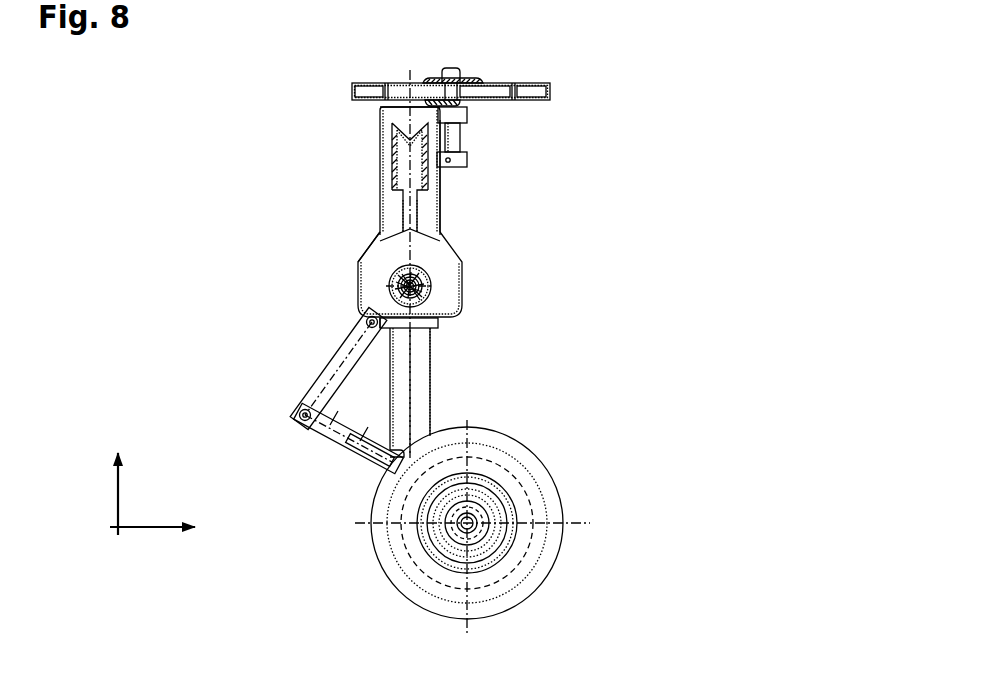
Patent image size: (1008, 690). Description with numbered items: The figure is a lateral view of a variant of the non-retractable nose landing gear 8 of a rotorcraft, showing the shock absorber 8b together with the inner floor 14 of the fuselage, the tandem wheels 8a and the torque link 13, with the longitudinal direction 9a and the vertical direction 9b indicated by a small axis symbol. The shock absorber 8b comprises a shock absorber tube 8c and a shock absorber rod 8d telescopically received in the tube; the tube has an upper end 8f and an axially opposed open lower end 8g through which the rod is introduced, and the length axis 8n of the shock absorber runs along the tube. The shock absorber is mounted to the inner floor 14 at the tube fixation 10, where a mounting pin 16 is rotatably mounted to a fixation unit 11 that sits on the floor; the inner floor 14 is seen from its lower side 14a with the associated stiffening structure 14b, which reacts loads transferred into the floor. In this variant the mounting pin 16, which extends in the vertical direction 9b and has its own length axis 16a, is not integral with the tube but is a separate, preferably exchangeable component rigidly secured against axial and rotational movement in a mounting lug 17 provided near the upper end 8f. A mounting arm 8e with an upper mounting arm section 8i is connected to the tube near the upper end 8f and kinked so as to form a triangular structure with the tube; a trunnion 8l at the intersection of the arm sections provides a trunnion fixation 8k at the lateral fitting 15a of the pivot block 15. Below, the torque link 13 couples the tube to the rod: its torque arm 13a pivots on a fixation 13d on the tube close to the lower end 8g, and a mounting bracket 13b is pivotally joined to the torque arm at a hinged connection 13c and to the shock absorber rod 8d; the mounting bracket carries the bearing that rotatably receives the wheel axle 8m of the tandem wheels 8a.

The nose landing gear 8 is at (268, 152).
The tandem wheels 8a is at (566, 546).
The shock absorber 8b is at (452, 366).
The shock absorber tube 8c is at (432, 208).
The shock absorber rod 8d is at (420, 352).
The mounting arm 8e is at (384, 207).
The upper end 8f is at (397, 105).
The lower end 8g is at (400, 337).
The upper mounting arm section 8i is at (408, 170).
The trunnion fixation 8k is at (430, 262).
The trunnion 8l is at (410, 288).
The wheel axle 8m is at (470, 524).
The length axis 8n is at (418, 392).
The longitudinal direction 9a is at (158, 529).
The vertical direction 9b is at (117, 506).
The tube fixation 10 is at (430, 78).
The fixation unit 11 is at (483, 80).
The torque link 13 is at (302, 423).
The torque arm 13a is at (330, 380).
The mounting bracket 13b is at (343, 443).
The hinged connection 13c is at (298, 421).
The fixation 13d is at (376, 339).
The inner floor 14 is at (350, 82).
The lower side 14a is at (362, 108).
The stiffening structure 14b is at (555, 91).
The pivot block 15 is at (446, 294).
The lateral fitting 15a is at (388, 262).
The mounting pin 16 is at (456, 72).
The length axis 16a is at (448, 130).
The mounting lug 17 is at (470, 160).